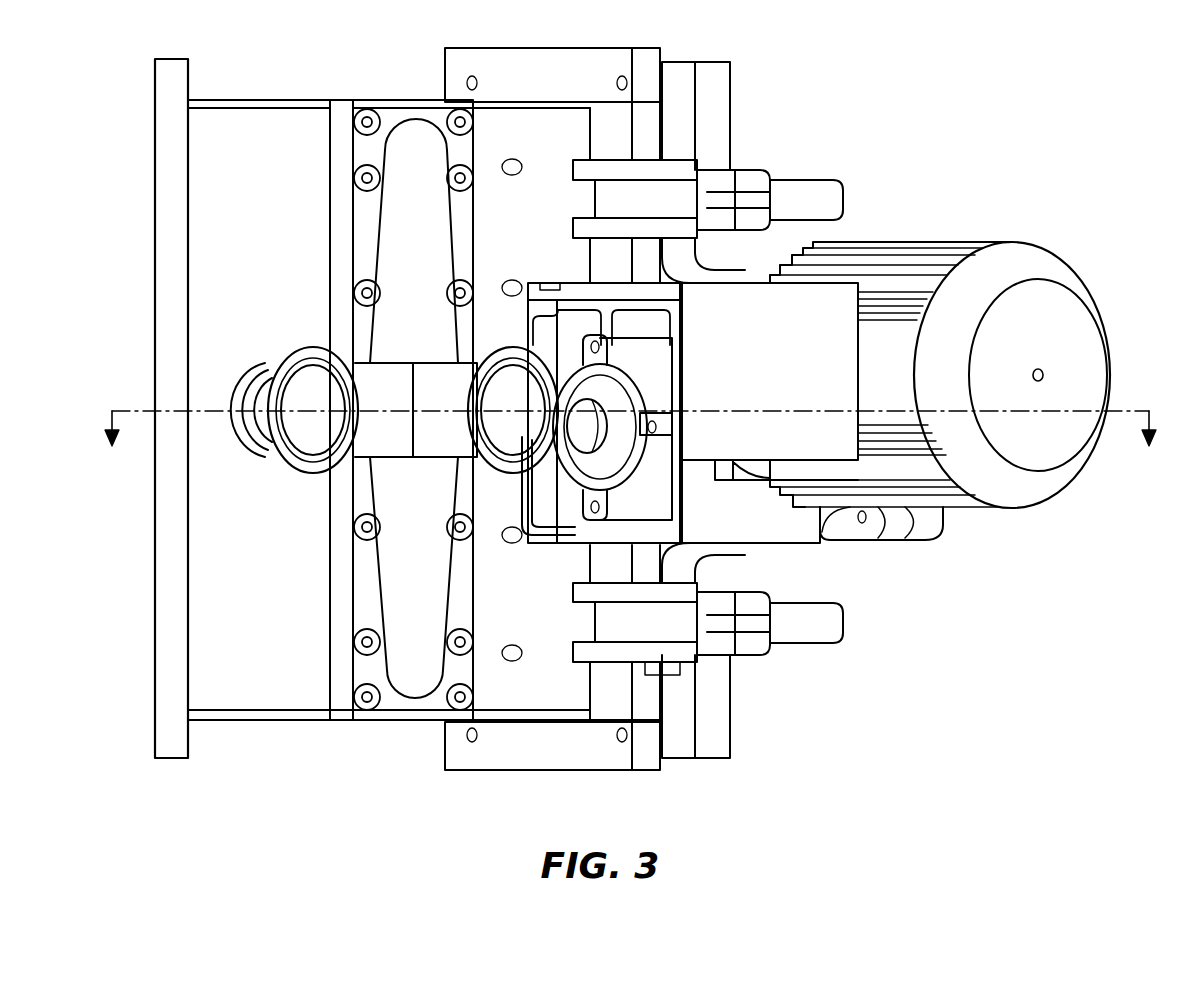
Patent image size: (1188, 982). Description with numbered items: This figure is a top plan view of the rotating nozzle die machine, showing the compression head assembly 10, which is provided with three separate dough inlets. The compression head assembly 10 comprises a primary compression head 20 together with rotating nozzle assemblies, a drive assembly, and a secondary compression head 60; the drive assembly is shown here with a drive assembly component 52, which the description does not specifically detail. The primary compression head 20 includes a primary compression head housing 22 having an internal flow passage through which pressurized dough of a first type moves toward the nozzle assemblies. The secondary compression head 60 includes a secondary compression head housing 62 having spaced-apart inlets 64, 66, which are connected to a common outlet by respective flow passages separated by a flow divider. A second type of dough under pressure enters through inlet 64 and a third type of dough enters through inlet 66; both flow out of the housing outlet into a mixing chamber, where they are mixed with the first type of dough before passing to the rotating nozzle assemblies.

The compression head assembly 10 is at (630, 409).
The primary compression head 20 is at (132, 589).
The primary compression head housing 22 is at (207, 213).
The motor 52 is at (1054, 272).
The secondary compression head 60 is at (395, 98).
The secondary compression head housing 62 is at (410, 682).
The inlet 64 is at (494, 372).
The inlet 66 is at (308, 438).